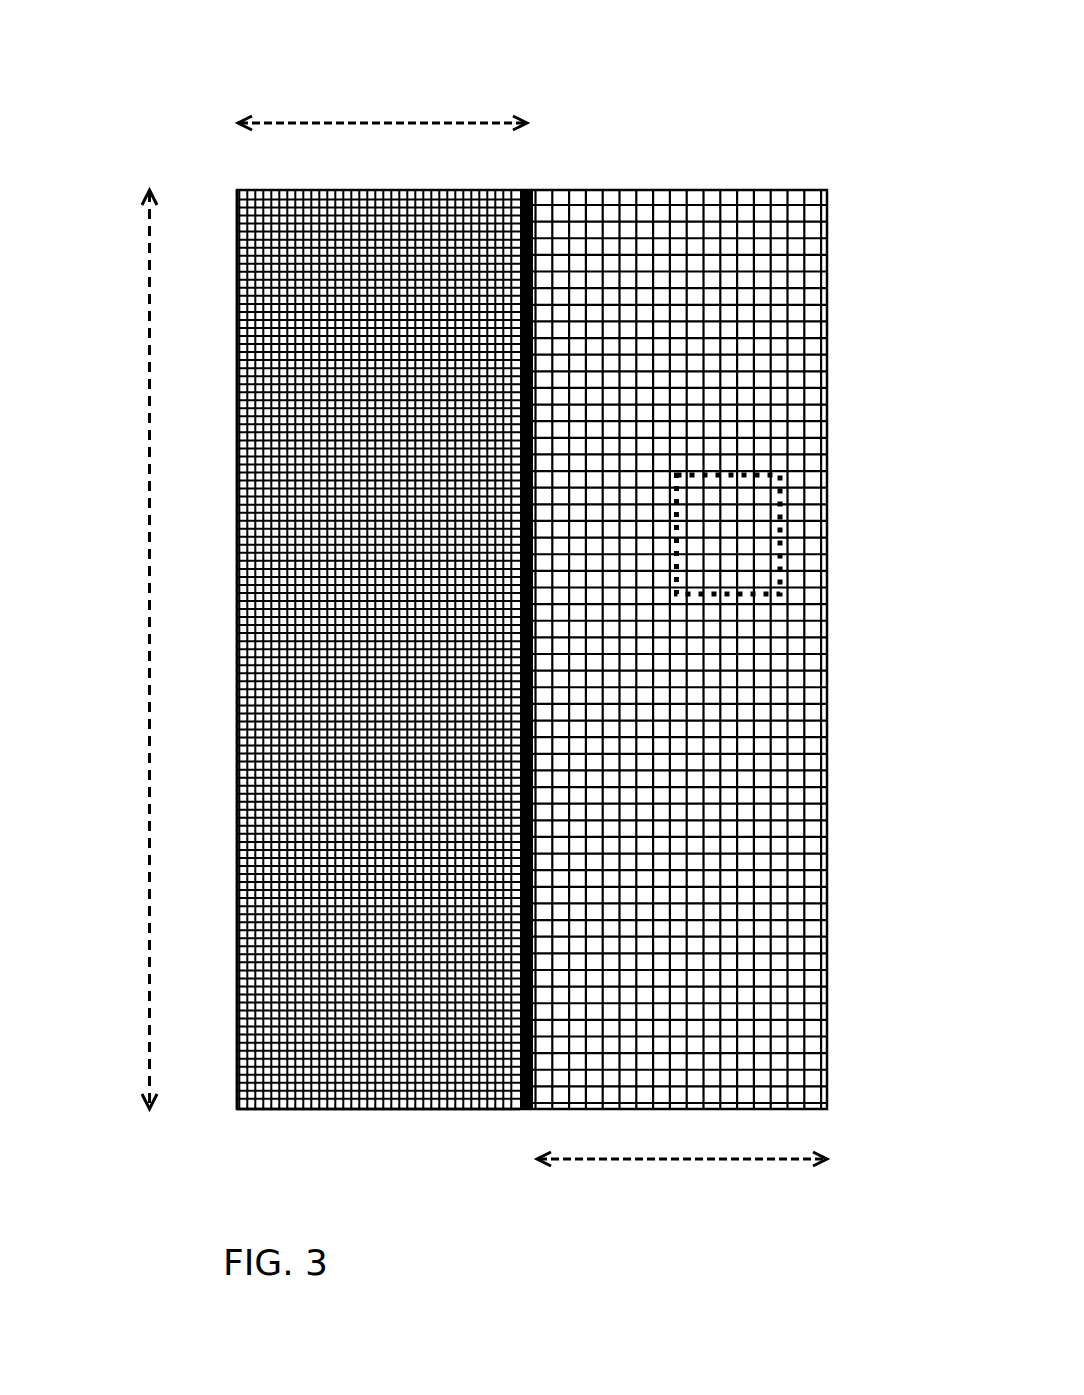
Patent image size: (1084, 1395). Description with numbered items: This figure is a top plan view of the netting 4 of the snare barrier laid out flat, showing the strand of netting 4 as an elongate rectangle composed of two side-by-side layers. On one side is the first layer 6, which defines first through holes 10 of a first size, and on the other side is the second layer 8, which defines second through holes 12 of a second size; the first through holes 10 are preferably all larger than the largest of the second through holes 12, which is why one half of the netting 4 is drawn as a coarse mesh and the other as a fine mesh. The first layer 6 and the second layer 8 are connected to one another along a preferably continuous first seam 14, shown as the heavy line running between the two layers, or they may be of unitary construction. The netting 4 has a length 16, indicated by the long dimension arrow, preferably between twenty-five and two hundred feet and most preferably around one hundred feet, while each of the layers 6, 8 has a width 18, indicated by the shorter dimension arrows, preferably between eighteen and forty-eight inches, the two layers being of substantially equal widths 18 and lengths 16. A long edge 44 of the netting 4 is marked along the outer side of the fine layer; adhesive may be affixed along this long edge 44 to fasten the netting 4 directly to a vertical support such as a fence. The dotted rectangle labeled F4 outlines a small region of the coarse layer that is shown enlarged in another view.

The netting 4 is at (860, 1096).
The first layer 6 is at (827, 278).
The second layer 8 is at (442, 1110).
The first through holes 10 is at (795, 880).
The second through holes 12 is at (272, 1082).
The first seam 14 is at (535, 277).
The length 16 is at (150, 555).
The width 18 is at (383, 123).
The long edge 44 is at (237, 452).
The detail region of FIG. 4 F4 is at (795, 551).